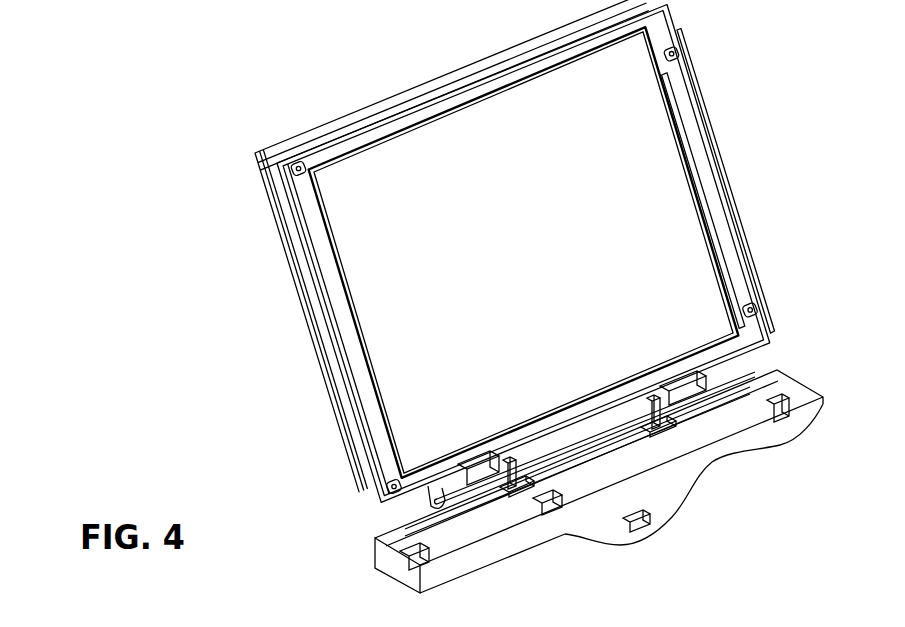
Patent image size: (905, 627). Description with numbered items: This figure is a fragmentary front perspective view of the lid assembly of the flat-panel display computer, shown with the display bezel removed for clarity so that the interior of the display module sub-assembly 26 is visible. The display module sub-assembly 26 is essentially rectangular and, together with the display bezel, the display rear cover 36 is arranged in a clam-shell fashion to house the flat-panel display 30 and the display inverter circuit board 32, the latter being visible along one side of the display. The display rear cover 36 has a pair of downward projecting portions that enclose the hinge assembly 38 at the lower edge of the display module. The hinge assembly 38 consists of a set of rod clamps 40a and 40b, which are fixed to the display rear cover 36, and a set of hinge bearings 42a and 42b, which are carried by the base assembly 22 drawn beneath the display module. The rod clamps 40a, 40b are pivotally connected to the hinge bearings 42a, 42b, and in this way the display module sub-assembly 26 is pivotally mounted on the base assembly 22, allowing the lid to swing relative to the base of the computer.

The base assembly 22 is at (813, 371).
The display module sub-assembly 26 is at (306, 272).
The flat-panel display 30 is at (657, 38).
The display inverter circuit board 32 is at (717, 216).
The display rear cover 36 is at (706, 114).
The hinge assembly 38 is at (714, 374).
The rod clamp 40a is at (677, 373).
The rod clamp 40b is at (464, 463).
The hinge bearing 42a is at (640, 447).
The hinge bearing 42b is at (635, 470).